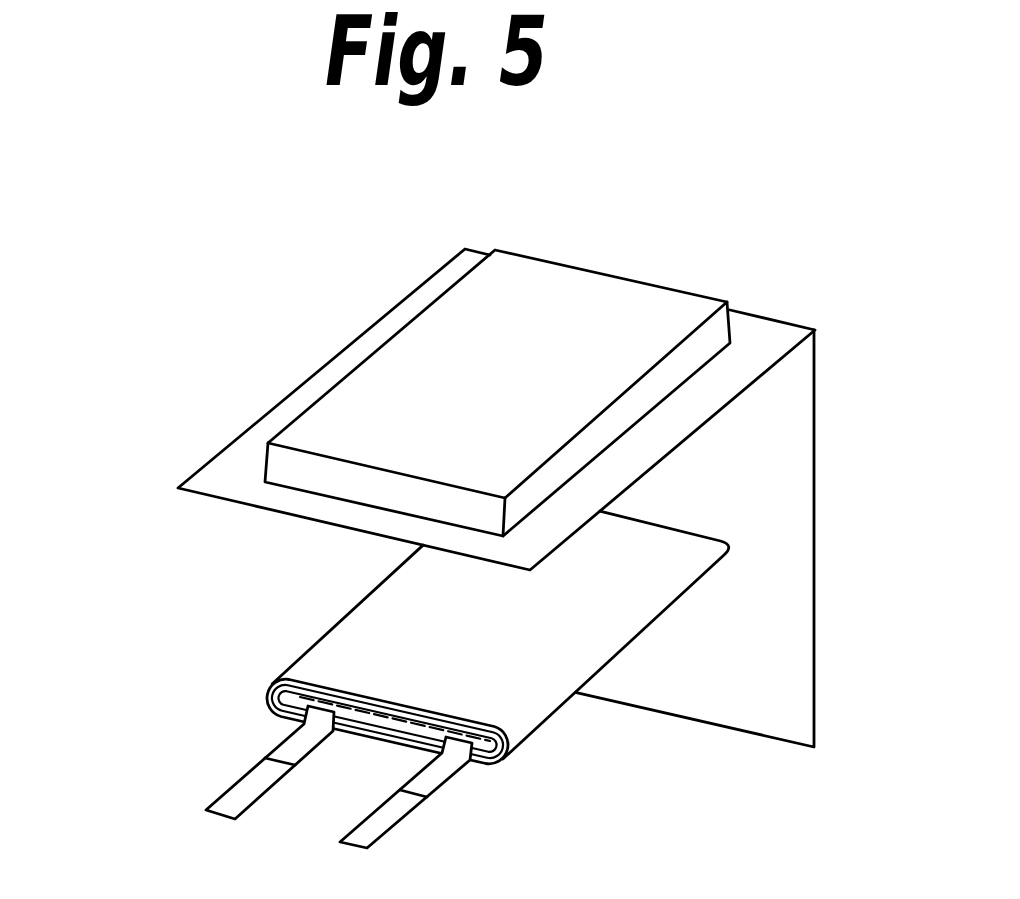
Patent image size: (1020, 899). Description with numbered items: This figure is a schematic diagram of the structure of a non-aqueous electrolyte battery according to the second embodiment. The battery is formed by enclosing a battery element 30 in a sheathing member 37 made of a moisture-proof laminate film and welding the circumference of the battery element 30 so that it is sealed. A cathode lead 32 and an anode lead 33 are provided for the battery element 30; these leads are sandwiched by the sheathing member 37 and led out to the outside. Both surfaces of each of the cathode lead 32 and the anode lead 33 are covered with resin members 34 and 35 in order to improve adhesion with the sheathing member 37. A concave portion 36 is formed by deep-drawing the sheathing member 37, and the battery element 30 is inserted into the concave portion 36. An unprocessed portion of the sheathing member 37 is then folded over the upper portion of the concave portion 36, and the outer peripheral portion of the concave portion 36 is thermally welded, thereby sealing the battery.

The battery element 30 is at (303, 653).
The cathode lead 32 is at (339, 840).
The anode lead 33 is at (212, 801).
The resin member 34 is at (412, 778).
The resin member 35 is at (282, 742).
The concave portion 36 is at (452, 308).
The sheathing member 37 is at (303, 384).